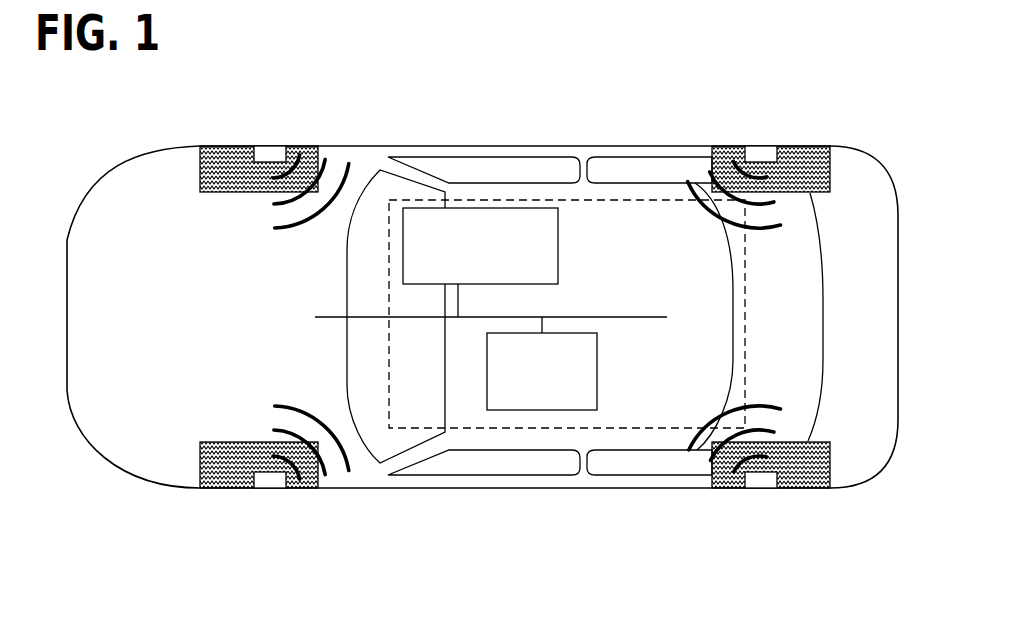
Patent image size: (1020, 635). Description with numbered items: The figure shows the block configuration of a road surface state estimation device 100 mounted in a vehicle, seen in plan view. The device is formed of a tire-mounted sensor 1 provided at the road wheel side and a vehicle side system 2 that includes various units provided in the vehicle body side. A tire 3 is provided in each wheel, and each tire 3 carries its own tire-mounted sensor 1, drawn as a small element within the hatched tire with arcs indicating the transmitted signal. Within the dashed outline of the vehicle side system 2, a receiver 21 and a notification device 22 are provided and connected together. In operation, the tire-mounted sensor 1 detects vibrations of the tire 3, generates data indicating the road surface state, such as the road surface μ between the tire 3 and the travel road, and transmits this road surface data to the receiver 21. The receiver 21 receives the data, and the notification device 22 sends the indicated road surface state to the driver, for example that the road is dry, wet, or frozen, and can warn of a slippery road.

The road surface state estimation device 100 is at (399, 124).
The tire-mounted sensor 1 is at (267, 154).
The tire 3 is at (200, 172).
The vehicle side system 2 is at (684, 200).
The receiver 21 is at (560, 410).
The notification device 22 is at (474, 207).